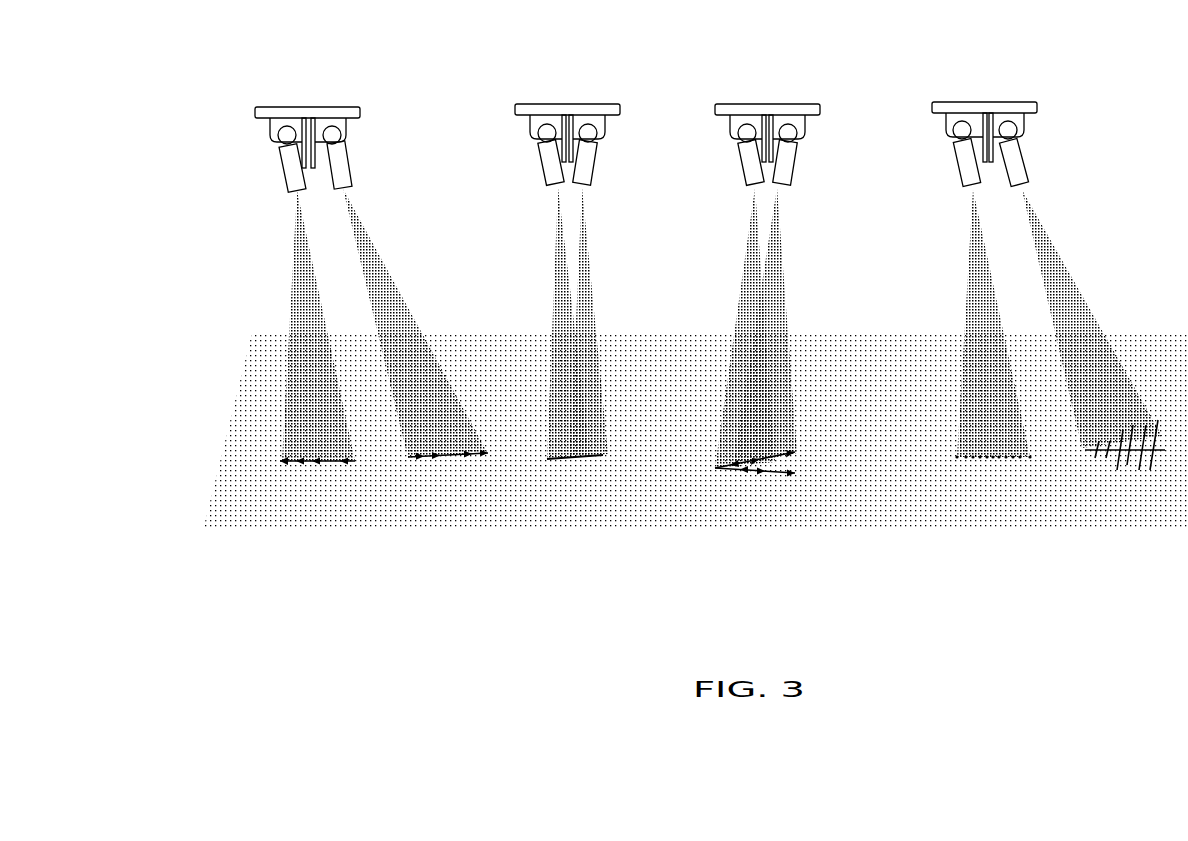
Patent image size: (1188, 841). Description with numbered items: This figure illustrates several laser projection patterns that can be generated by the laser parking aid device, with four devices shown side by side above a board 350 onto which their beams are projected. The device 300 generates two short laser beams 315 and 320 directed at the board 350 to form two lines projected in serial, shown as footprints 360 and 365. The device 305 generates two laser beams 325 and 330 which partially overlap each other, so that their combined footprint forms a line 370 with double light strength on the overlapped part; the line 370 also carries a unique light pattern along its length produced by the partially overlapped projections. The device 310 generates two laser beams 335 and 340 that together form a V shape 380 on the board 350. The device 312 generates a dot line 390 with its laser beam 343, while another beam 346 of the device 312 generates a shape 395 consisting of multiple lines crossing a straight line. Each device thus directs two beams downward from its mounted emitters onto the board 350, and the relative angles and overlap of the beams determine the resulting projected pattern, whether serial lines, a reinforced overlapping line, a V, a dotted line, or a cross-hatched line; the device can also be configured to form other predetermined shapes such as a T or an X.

The device 300 is at (277, 107).
The device 305 is at (551, 104).
The device 310 is at (792, 106).
The device 312 is at (985, 102).
The short laser beam 315 is at (289, 293).
The short laser beam 320 is at (389, 277).
The laser beam 325 is at (553, 287).
The laser beam 330 is at (590, 262).
The laser beam 335 is at (742, 280).
The laser beam 340 is at (783, 253).
The laser beam 343 is at (965, 290).
The beam 346 is at (1068, 270).
The board 350 is at (227, 457).
The first light footprint 360 is at (302, 465).
The second light footprint 365 is at (447, 462).
The line 370 is at (575, 460).
The V shape 380 is at (770, 473).
The dot line 390 is at (970, 460).
The shape 395 is at (1128, 455).